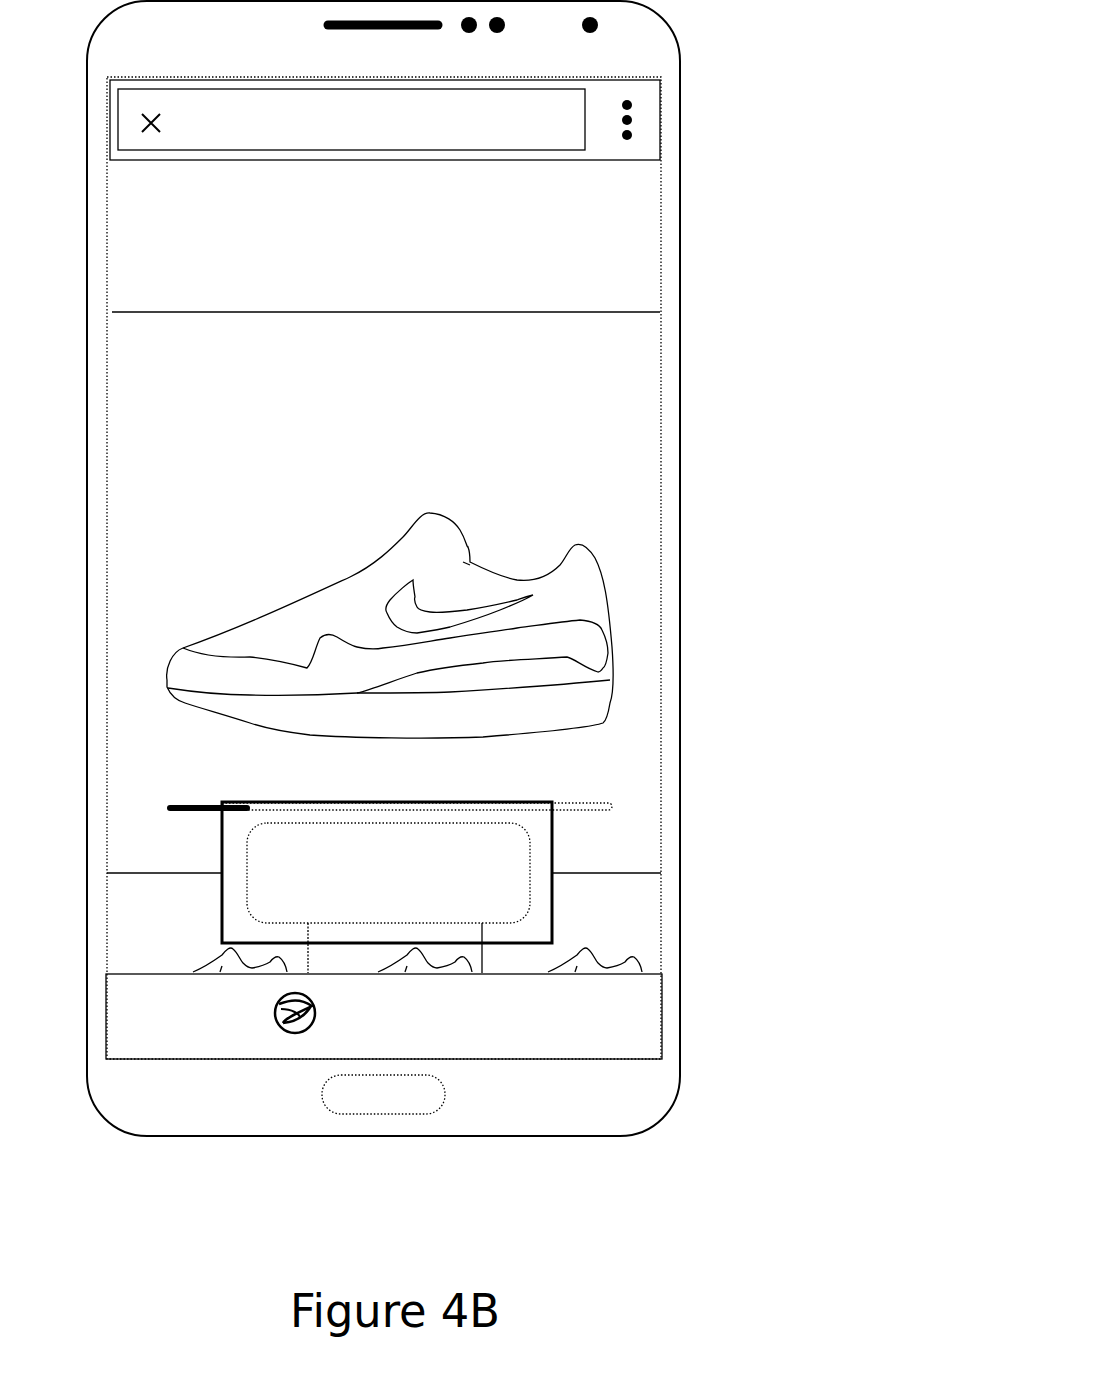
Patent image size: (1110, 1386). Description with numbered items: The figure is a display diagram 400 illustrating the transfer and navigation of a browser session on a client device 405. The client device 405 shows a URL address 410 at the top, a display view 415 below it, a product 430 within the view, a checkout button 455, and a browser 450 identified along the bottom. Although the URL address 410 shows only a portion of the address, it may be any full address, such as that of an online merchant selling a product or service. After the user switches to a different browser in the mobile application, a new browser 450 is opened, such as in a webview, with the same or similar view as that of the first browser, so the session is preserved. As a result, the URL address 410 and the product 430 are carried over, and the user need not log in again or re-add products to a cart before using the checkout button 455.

The display diagram 400 is at (838, 403).
The client device 405 is at (87, 380).
The URL address 410 is at (135, 123).
The display view 415 is at (137, 182).
The product 430 is at (608, 723).
The checkout button 455 is at (535, 921).
The browser 450 is at (647, 1023).